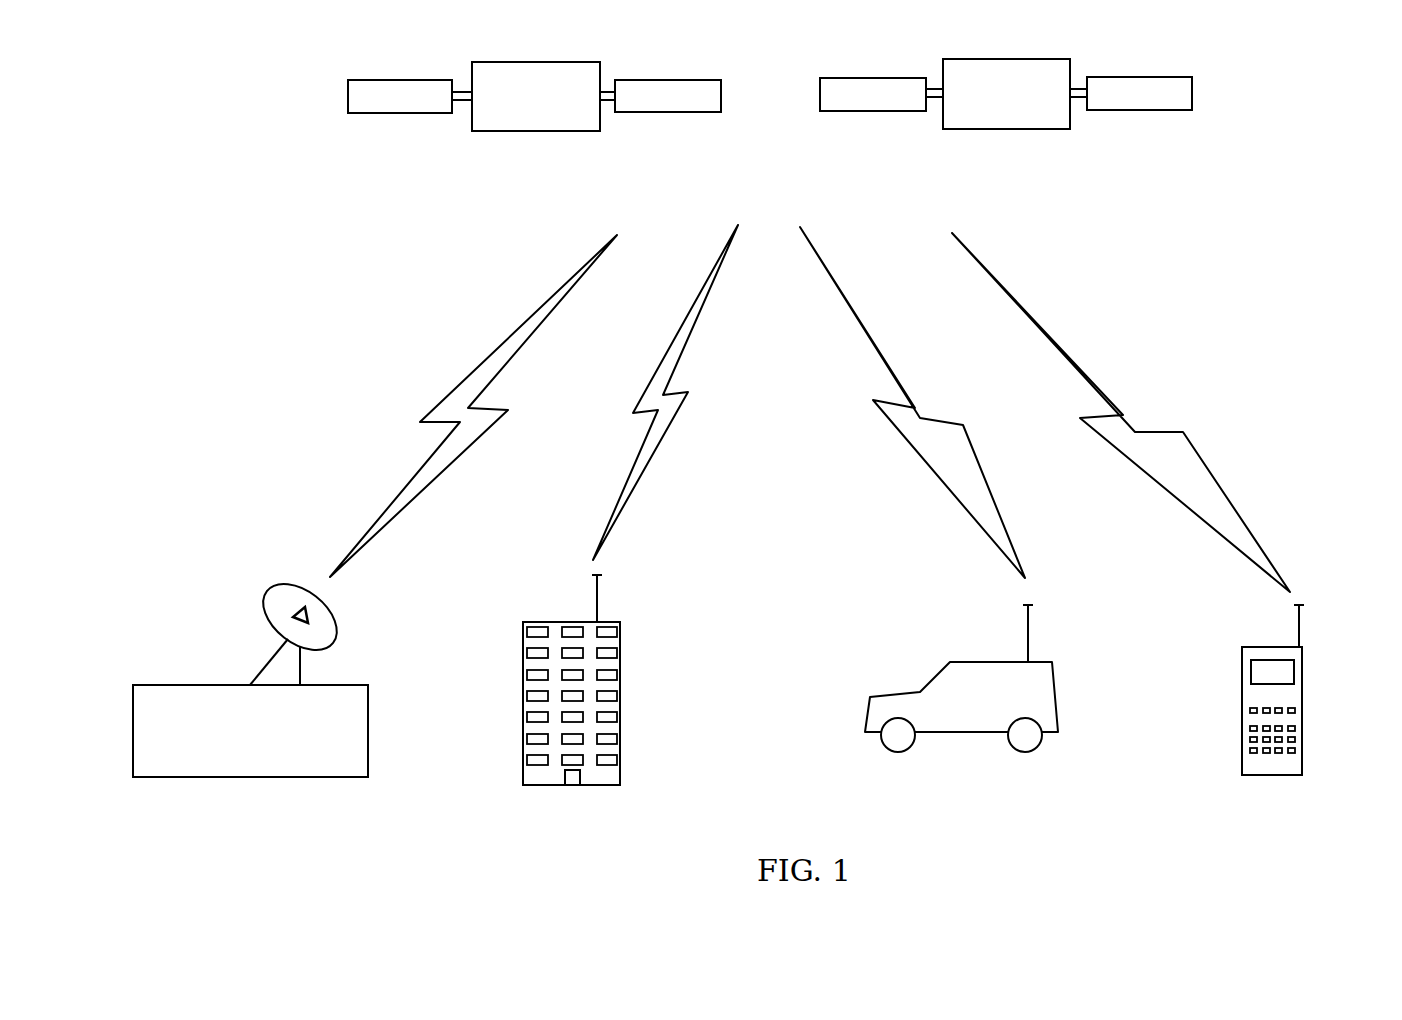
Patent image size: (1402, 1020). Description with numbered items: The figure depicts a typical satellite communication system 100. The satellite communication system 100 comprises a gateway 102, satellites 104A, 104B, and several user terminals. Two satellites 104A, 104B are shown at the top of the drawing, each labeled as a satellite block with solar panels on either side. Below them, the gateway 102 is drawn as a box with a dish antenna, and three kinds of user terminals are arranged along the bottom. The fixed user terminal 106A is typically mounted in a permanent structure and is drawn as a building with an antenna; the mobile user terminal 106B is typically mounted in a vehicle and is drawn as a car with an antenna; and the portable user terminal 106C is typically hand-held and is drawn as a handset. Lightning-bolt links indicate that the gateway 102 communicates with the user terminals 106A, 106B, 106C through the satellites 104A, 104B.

The satellite communication system 100 is at (203, 96).
The gateway 102 is at (330, 777).
The satellite 104A is at (703, 80).
The satellite 104B is at (1172, 77).
The fixed user terminal 106A is at (610, 785).
The mobile user terminal 106B is at (1045, 732).
The portable user terminal 106C is at (1290, 775).